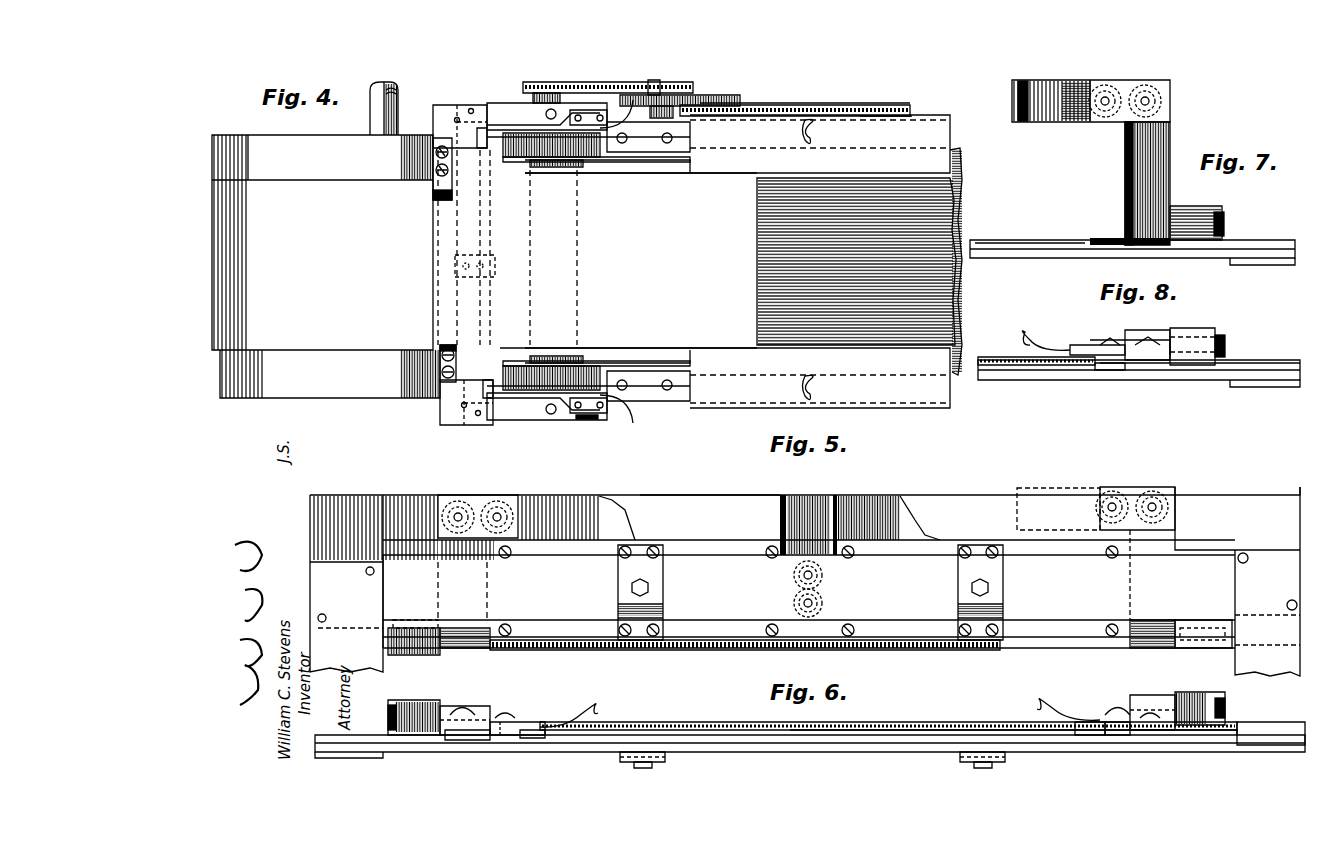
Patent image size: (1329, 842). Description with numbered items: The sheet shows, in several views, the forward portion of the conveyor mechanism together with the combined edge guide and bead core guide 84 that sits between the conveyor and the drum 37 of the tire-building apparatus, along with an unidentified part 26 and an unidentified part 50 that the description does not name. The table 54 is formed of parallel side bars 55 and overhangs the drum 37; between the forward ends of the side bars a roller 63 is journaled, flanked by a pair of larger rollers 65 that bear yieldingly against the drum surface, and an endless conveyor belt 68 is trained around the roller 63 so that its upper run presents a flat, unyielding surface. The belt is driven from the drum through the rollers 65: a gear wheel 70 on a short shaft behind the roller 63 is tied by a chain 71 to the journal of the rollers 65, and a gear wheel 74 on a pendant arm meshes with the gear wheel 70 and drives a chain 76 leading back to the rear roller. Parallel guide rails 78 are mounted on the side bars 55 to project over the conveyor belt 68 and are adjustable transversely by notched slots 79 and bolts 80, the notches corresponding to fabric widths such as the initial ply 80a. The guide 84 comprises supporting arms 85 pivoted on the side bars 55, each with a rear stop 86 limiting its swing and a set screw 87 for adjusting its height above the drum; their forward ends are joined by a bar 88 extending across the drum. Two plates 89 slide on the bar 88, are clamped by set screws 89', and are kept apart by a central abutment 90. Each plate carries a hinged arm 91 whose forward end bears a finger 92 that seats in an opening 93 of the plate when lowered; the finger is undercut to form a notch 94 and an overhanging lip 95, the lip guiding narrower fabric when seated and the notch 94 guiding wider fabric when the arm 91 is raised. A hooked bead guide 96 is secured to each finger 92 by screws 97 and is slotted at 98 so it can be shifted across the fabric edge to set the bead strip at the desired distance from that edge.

In FIG. 4, the stop post 26 is at (384, 98).
In FIG. 4, the drum 37 is at (330, 374).
In FIG. 4, the feed rack 50 is at (805, 88).
In FIG. 4, the table 54 is at (960, 195).
In FIG. 4, the side bars 55 is at (680, 138).
In FIG. 4, the roller 63 is at (577, 250).
In FIG. 4, the rollers 65 is at (551, 162).
In FIG. 4, the endless conveyor belt 68 is at (834, 261).
In FIG. 4, the gear wheel 70 is at (700, 95).
In FIG. 4, the chain 71 is at (632, 95).
In FIG. 4, the gear wheel 74 is at (745, 105).
In FIG. 4, the chain 76 is at (886, 110).
In FIG. 4, the guide rails 78 is at (952, 130).
In FIG. 4, the notched slots 79 is at (805, 140).
In FIG. 4, the bolts 80 is at (818, 128).
In FIG. 8, the bolts 80 is at (1035, 349).
In FIG. 6, the bolts 80 is at (740, 730).
In FIG. 4, the initial ply 80a is at (322, 242).
In FIG. 4, the combined edge guide and bead core guide 84 is at (440, 105).
In FIG. 5, the combined edge guide and bead core guide 84 is at (760, 495).
In FIG. 4, the supporting arms 85 is at (495, 105).
In FIG. 7, the supporting arms 85 is at (1248, 262).
In FIG. 8, the supporting arms 85 is at (1280, 378).
In FIG. 5, the supporting arms 85 is at (385, 660).
In FIG. 6, the supporting arms 85 is at (345, 752).
In FIG. 4, the stop 86 is at (593, 100).
In FIG. 4, the set screw 87 is at (548, 110).
In FIG. 7, the bar 88 is at (1045, 248).
In FIG. 8, the bar 88 is at (1215, 382).
In FIG. 5, the bar 88 is at (805, 567).
In FIG. 6, the bar 88 is at (400, 752).
In FIG. 4, the plates 89 is at (449, 415).
In FIG. 7, the plates 89 is at (1030, 230).
In FIG. 8, the plates 89 is at (1200, 350).
In FIG. 5, the plates 89 is at (932, 476).
In FIG. 6, the plates 89 is at (390, 717).
In FIG. 5, the set screws 89' is at (835, 592).
In FIG. 6, the set screws 89' is at (826, 766).
In FIG. 5, the abutment 90 is at (823, 495).
In FIG. 6, the abutment 90 is at (808, 743).
In FIG. 7, the arm 91 is at (1178, 205).
In FIG. 8, the arm 91 is at (1165, 330).
In FIG. 5, the arm 91 is at (478, 655).
In FIG. 6, the arm 91 is at (448, 706).
In FIG. 7, the finger 92 is at (1088, 82).
In FIG. 8, the finger 92 is at (1112, 375).
In FIG. 5, the finger 92 is at (512, 495).
In FIG. 6, the finger 92 is at (470, 740).
In FIG. 7, the openings 93 is at (1095, 240).
In FIG. 8, the openings 93 is at (1165, 375).
In FIG. 5, the openings 93 is at (440, 500).
In FIG. 8, the notch 94 is at (1085, 375).
In FIG. 6, the notch 94 is at (505, 742).
In FIG. 7, the overhanging lip 95 is at (1065, 124).
In FIG. 8, the overhanging lip 95 is at (1074, 345).
In FIG. 6, the overhanging lip 95 is at (550, 740).
In FIG. 4, the bead guide 96 is at (433, 190).
In FIG. 7, the bead guide 96 is at (1017, 82).
In FIG. 8, the bead guide 96 is at (1028, 330).
In FIG. 5, the bead guide 96 is at (600, 495).
In FIG. 6, the bead guide 96 is at (605, 698).
In FIG. 6, the screws 97 is at (470, 712).
In FIG. 7, the slot 98 is at (1120, 90).